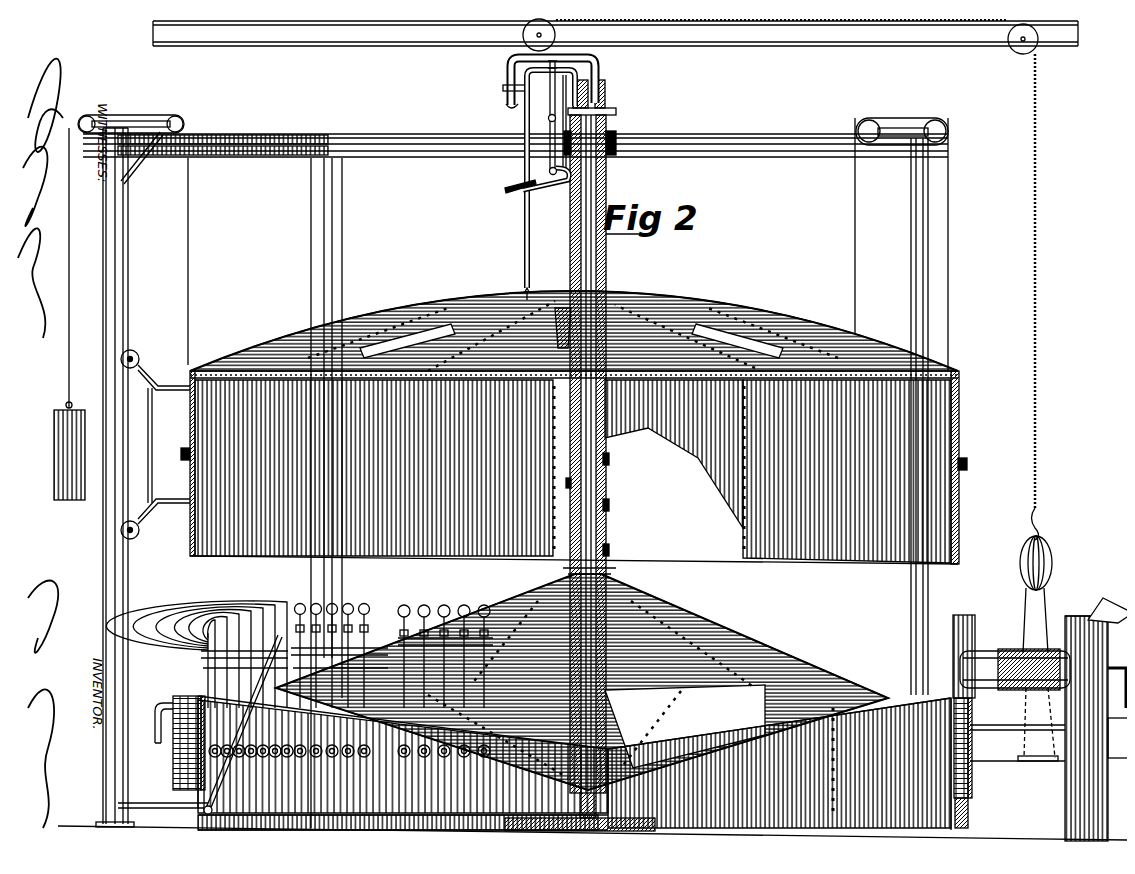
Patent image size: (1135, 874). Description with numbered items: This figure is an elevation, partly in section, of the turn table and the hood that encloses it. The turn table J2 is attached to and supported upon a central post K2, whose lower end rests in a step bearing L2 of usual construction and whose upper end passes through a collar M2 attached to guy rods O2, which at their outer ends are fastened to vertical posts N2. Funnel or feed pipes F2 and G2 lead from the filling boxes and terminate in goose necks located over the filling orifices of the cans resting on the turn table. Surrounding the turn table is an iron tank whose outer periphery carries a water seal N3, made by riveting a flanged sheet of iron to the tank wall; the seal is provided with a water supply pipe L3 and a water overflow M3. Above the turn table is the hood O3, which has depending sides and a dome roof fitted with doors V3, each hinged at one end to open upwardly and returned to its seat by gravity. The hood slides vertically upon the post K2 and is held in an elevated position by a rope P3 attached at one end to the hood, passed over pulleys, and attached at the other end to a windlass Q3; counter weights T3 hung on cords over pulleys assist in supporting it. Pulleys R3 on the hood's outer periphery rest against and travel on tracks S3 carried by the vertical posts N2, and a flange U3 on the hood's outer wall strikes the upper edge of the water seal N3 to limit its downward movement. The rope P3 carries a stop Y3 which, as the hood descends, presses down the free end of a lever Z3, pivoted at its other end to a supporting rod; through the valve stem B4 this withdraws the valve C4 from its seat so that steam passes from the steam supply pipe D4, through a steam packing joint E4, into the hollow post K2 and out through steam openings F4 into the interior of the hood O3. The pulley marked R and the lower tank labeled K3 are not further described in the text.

The steam supply pipe D4 is at (535, 83).
The valve C4 is at (550, 179).
The steam packing joint E4 is at (597, 82).
The valve stem B4 is at (548, 117).
The collar M2 is at (600, 123).
The guy rods O2 is at (746, 156).
The stop Y3 is at (515, 172).
The lever Z3 is at (545, 178).
The rope P3 is at (516, 225).
The counter weights T3 is at (303, 190).
The tracks S3 is at (121, 262).
The vertical posts N2 is at (320, 260).
The pulley R is at (155, 420).
The pulleys R3 is at (155, 524).
The flange U3 is at (171, 450).
The doors V3 is at (574, 331).
The steam openings F4 is at (598, 452).
The hood O3 is at (573, 361).
The central post K2 is at (605, 565).
The funnel pipes G2 is at (240, 596).
The funnel pipes F2 is at (332, 597).
The lower tank K3 is at (192, 686).
The water overflow M3 is at (146, 736).
The water seal N3 is at (168, 760).
The water supply pipe L3 is at (961, 808).
The turn table J2 is at (747, 625).
The step bearing L2 is at (590, 760).
The windlass Q3 is at (983, 645).